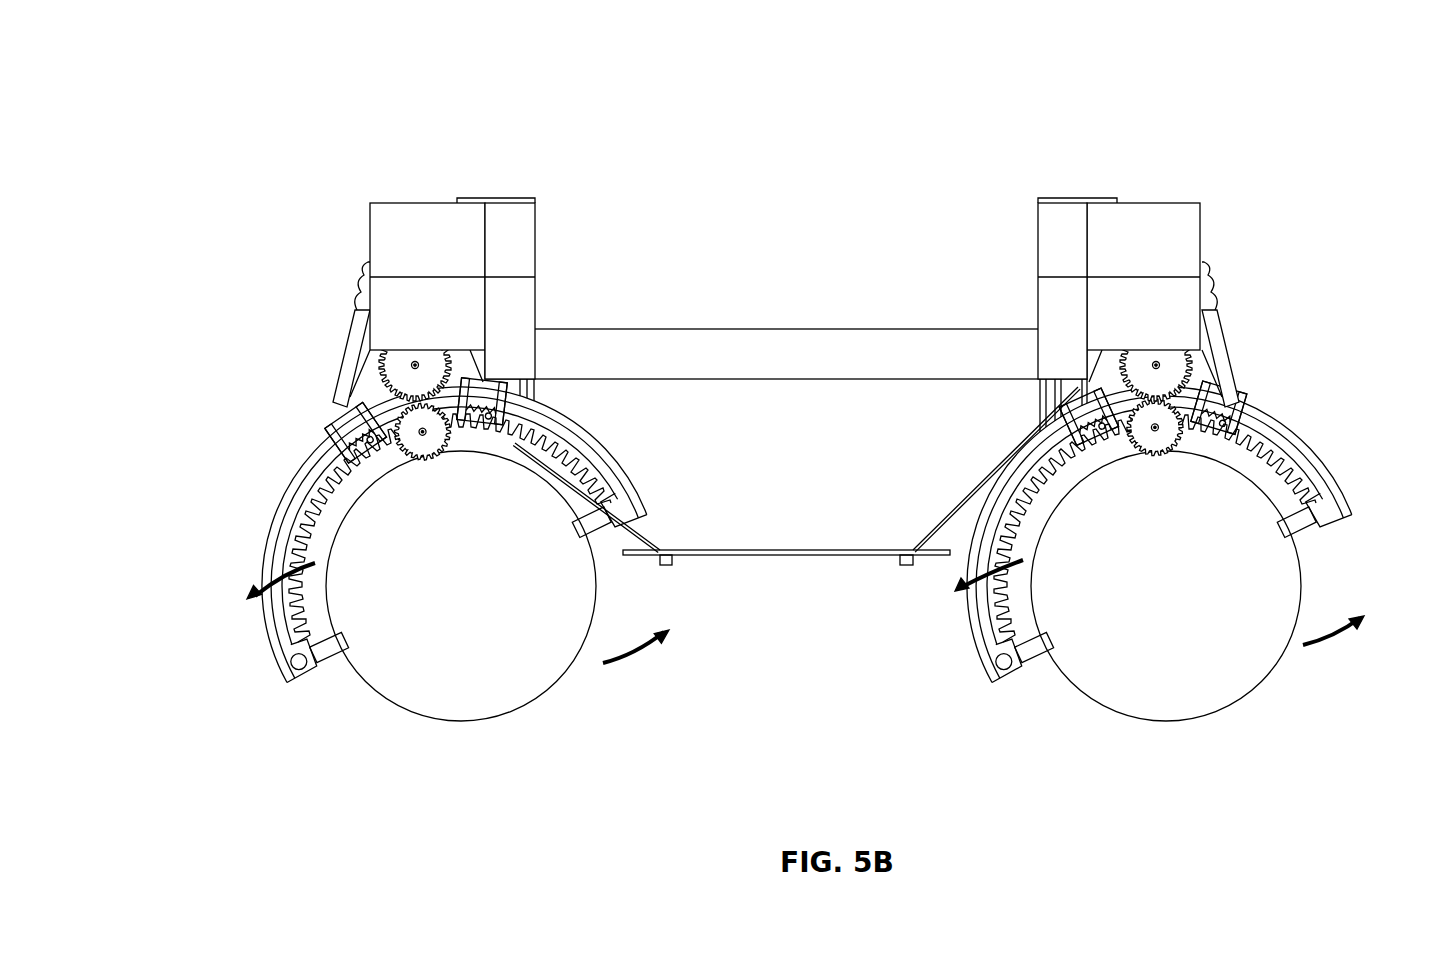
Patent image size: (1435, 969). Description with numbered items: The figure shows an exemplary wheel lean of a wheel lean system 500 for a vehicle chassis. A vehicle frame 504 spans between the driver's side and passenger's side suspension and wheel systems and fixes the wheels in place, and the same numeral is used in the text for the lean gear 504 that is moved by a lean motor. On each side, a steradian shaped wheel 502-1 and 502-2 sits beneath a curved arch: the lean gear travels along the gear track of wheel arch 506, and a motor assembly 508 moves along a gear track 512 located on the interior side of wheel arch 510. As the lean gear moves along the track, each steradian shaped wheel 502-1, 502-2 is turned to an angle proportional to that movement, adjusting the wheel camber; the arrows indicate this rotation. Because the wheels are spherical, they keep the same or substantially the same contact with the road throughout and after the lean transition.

The wheel lean system 500 is at (1183, 88).
The steradian shaped wheel 502-1 is at (1273, 672).
The steradian shaped wheel 502-2 is at (560, 712).
The vehicle frame 504 is at (745, 328).
The wheel arch 506 is at (1293, 437).
The motor assembly 508 is at (327, 430).
The wheel arch 510 is at (267, 538).
The gear track 512 is at (300, 612).